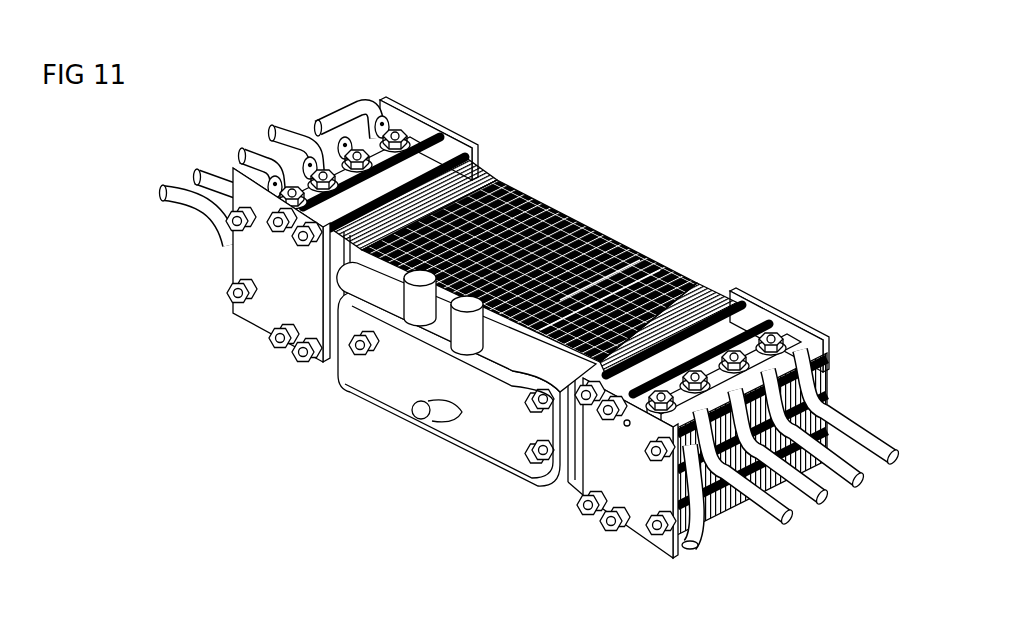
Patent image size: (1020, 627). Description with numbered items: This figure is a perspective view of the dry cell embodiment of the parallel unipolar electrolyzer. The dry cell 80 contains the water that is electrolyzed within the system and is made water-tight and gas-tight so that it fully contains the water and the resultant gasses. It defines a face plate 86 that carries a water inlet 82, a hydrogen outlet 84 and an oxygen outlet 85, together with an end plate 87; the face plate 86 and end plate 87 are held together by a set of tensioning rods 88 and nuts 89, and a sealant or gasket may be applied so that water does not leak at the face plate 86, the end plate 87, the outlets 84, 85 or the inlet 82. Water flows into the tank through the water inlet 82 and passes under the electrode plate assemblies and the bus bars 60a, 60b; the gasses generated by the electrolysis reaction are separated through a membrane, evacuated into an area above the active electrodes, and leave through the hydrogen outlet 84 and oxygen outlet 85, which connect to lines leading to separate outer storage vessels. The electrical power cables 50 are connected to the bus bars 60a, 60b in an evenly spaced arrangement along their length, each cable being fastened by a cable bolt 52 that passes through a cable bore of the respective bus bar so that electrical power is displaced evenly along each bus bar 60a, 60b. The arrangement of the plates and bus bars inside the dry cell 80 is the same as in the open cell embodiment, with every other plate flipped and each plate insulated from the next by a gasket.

The electrical power cable 50 is at (350, 100).
The cable bolt 52 is at (397, 128).
The bus bar 60a is at (477, 173).
The bus bar 60b is at (713, 300).
The dry cell 80 is at (580, 227).
The water inlet 82 is at (420, 423).
The hydrogen outlet 84 is at (297, 367).
The oxygen outlet 85 is at (466, 300).
The face plate 86 is at (383, 377).
The end plate 87 is at (633, 250).
The tensioning rod 88 is at (538, 458).
The nut 89 is at (415, 283).